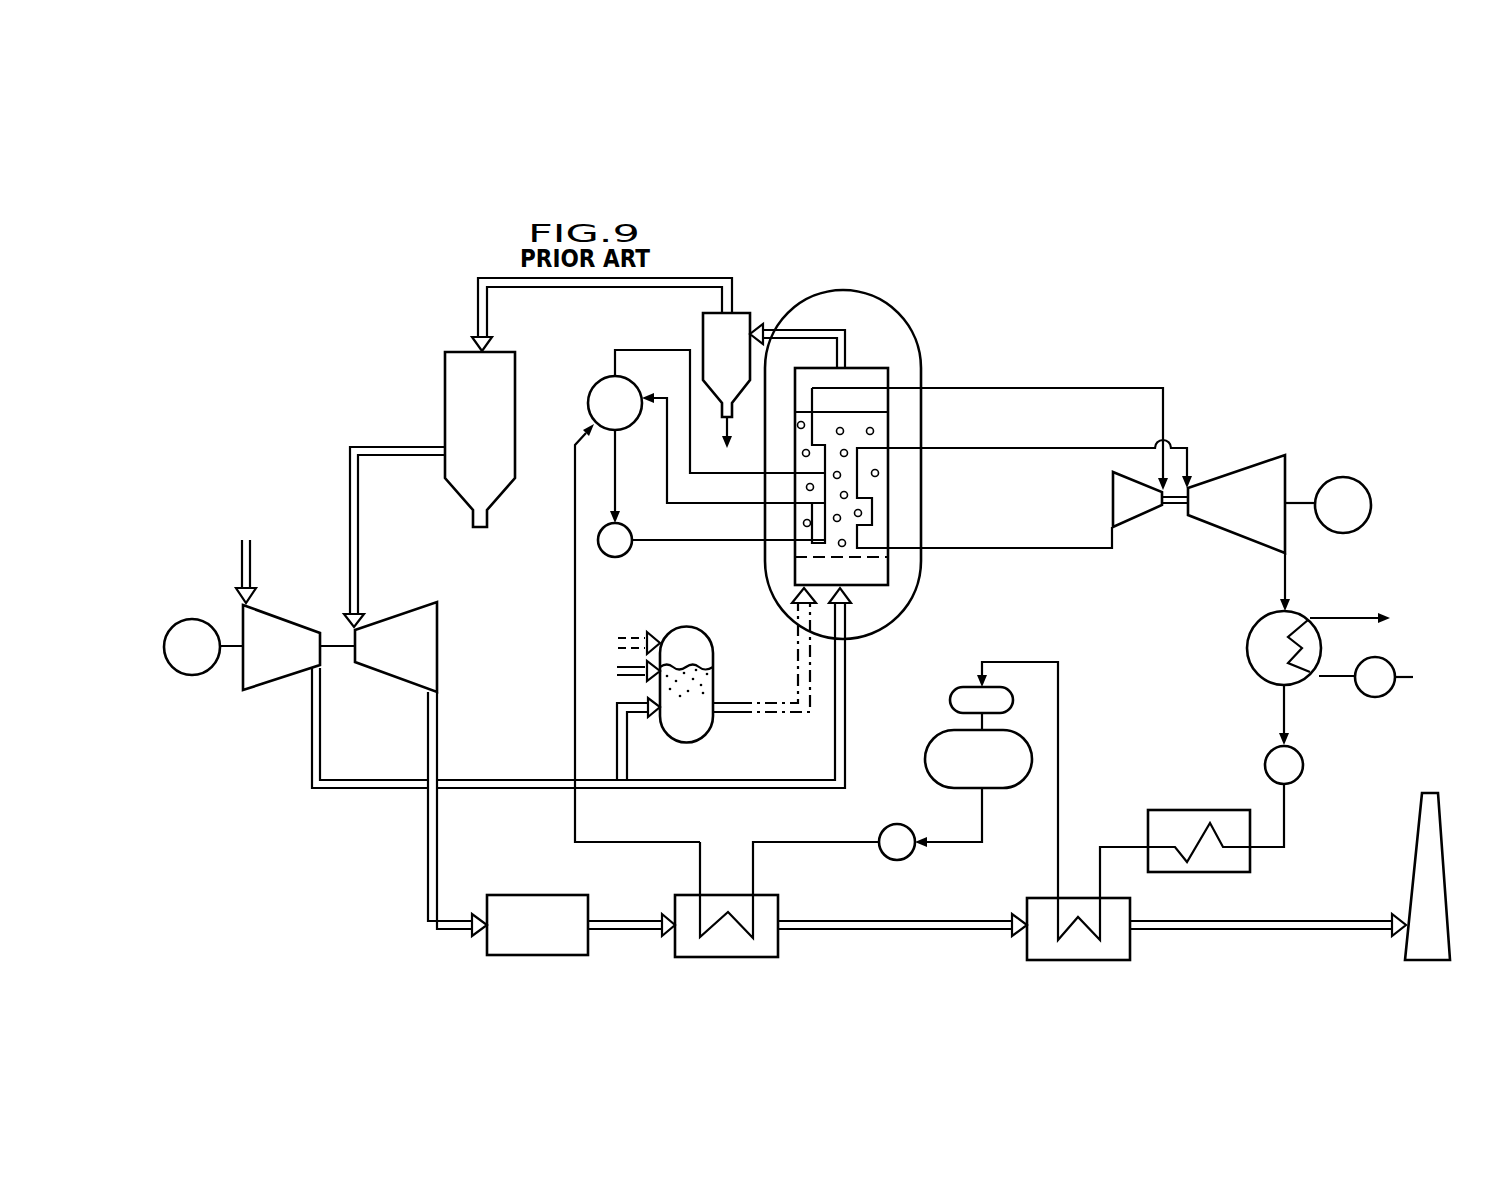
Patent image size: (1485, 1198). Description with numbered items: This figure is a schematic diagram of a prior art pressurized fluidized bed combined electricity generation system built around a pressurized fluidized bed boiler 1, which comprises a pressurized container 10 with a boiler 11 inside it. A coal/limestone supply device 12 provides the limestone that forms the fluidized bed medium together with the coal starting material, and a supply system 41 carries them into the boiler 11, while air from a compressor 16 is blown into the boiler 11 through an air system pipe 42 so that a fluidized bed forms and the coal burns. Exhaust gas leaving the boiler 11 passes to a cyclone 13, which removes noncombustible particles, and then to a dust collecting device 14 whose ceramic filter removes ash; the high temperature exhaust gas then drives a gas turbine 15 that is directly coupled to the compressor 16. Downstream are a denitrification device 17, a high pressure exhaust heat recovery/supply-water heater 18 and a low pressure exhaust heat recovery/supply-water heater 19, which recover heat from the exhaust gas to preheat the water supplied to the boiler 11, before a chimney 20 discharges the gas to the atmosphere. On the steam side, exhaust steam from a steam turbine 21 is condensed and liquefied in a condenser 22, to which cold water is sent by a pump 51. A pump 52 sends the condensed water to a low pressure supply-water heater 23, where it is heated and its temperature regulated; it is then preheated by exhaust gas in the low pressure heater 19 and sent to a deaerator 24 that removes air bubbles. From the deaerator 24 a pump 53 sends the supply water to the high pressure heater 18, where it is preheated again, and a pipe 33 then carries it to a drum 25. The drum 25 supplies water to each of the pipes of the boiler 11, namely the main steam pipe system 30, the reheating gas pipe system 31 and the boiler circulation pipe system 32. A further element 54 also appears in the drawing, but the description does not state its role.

The pressurized fluidized bed boiler 1 is at (884, 276).
The pressurized container 10 is at (913, 313).
The boiler 11 is at (890, 377).
The coal/limestone supply device 12 is at (678, 628).
The cyclone 13 is at (748, 313).
The dust collecting device 14 is at (445, 368).
The gas turbine 15 is at (390, 610).
The compressor 16 is at (243, 685).
The denitrification device 17 is at (487, 945).
The high pressure exhaust heat recovery/supply-water heater 18 is at (728, 972).
The low pressure exhaust heat recovery/supply-water heater 19 is at (1085, 962).
The chimney 20 is at (1430, 793).
The steam turbine 21 is at (1242, 467).
The condenser 22 is at (1253, 630).
The low pressure supply-water heater 23 is at (1153, 810).
The deaerator 24 is at (943, 732).
The drum 25 is at (600, 377).
The main steam pipe system 30 is at (1117, 390).
The reheating gas pipe system 31 is at (944, 462).
The boiler circulation pipe system 32 is at (688, 543).
The pipe 33 is at (575, 700).
The supply system 41 is at (742, 698).
The air system pipe 42 is at (738, 782).
The pump 51 is at (1375, 697).
The pump 52 is at (1302, 773).
The pump 53 is at (877, 857).
The boiler circulation pump 54 is at (632, 532).